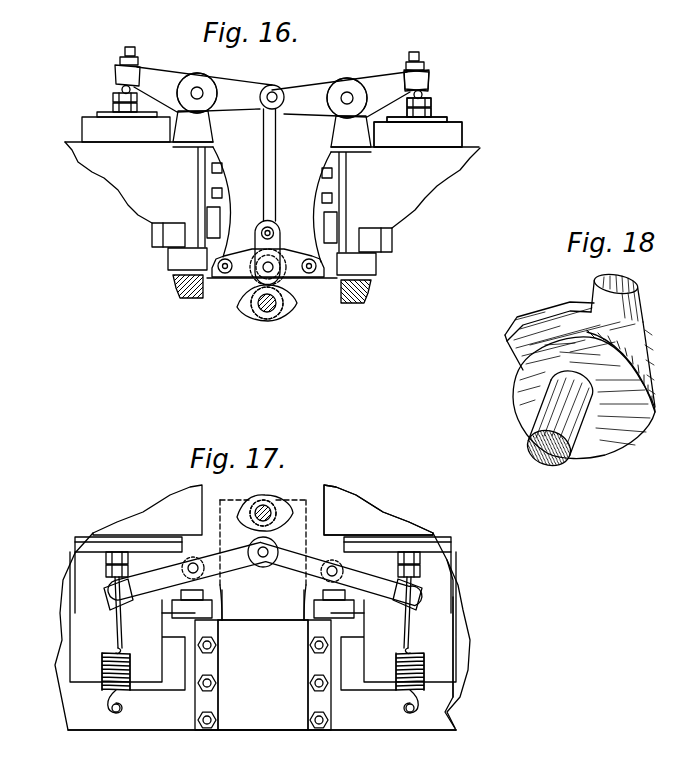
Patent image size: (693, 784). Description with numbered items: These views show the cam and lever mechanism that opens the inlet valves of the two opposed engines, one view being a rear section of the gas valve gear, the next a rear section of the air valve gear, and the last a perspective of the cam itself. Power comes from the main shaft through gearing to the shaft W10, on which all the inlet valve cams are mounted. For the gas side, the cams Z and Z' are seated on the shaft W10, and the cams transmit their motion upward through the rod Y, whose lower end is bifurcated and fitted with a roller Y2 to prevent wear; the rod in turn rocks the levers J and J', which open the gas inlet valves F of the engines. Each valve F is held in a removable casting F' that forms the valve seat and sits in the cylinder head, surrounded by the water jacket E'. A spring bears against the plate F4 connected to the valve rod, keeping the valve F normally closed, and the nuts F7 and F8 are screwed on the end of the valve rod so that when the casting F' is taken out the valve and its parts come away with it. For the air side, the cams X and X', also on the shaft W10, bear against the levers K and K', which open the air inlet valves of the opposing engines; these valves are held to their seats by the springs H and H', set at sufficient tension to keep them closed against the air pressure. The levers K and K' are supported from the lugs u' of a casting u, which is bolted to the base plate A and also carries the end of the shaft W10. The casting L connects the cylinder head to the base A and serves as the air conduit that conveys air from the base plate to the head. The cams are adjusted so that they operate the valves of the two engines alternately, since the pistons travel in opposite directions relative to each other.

In FIG. 16, the lever J' is at (210, 88).
In FIG. 16, the lever J is at (333, 89).
In FIG. 16, the rod Y is at (266, 153).
In FIG. 16, the roller Y2 is at (281, 258).
In FIG. 16, the water jacket E' is at (436, 188).
In FIG. 16, the nut F8 is at (426, 98).
In FIG. 16, the nut F7 is at (430, 110).
In FIG. 16, the plate F4 is at (460, 114).
In FIG. 16, the removable casting F' is at (432, 132).
In FIG. 16, the cam Z is at (274, 303).
In FIG. 16, the cam Z' is at (242, 304).
In FIG. 16, the shaft W10 is at (267, 310).
In FIG. 17, the shaft W10 is at (267, 509).
In FIG. 18, the shaft W10 is at (551, 420).
In FIG. 17, the cam X' is at (261, 507).
In FIG. 18, the cam X' is at (568, 354).
In FIG. 17, the cam X is at (278, 505).
In FIG. 18, the cam X is at (586, 394).
In FIG. 17, the lever K' is at (187, 571).
In FIG. 17, the lever K is at (341, 573).
In FIG. 17, the lugs u' is at (263, 600).
In FIG. 17, the casting u is at (263, 675).
In FIG. 17, the base plate A is at (173, 725).
In FIG. 17, the spring H' is at (101, 671).
In FIG. 17, the spring H is at (418, 671).
In FIG. 17, the casting L is at (441, 647).
In FIG. 17, the gas inlet valve F is at (378, 510).